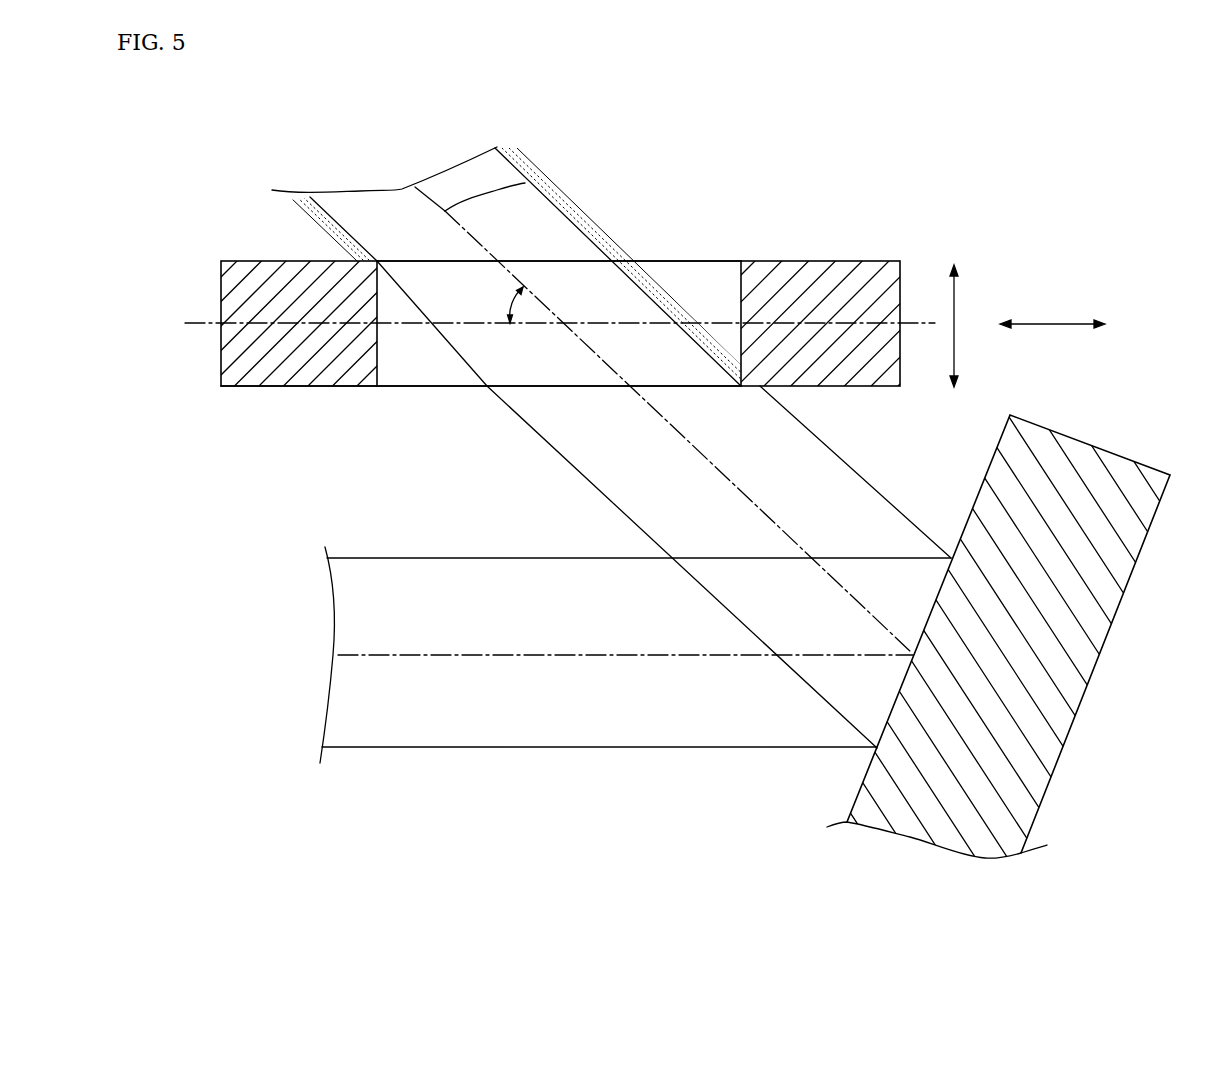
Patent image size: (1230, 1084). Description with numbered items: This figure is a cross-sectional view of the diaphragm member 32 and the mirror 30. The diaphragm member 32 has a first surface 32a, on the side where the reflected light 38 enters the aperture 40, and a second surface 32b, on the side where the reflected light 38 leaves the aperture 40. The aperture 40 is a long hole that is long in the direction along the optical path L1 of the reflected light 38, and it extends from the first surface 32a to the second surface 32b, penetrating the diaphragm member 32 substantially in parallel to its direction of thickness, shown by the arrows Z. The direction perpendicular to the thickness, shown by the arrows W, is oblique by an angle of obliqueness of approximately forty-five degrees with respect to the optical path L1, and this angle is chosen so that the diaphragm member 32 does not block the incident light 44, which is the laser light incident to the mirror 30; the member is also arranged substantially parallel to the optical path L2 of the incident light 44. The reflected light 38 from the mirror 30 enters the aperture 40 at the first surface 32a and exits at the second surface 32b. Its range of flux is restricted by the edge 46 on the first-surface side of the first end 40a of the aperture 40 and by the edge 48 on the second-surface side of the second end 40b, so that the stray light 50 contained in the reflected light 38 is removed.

The mirror 30 is at (1090, 618).
The diaphragm member 32 is at (850, 267).
The first surface 32a is at (272, 387).
The second surface 32b is at (260, 258).
The reflected light 38 is at (853, 462).
The aperture 40 is at (394, 387).
The first end 40a is at (741, 287).
The second end 40b is at (380, 288).
The incident light 44 is at (428, 738).
The edge 46 is at (743, 390).
The edge 48 is at (373, 261).
The stray light 50 is at (293, 211).
The optical path of the reflected light L1 is at (547, 181).
The optical path of the incident light L2 is at (370, 655).
The direction of thickness Z is at (958, 302).
The direction perpendicular to the direction of thickness W is at (1052, 322).